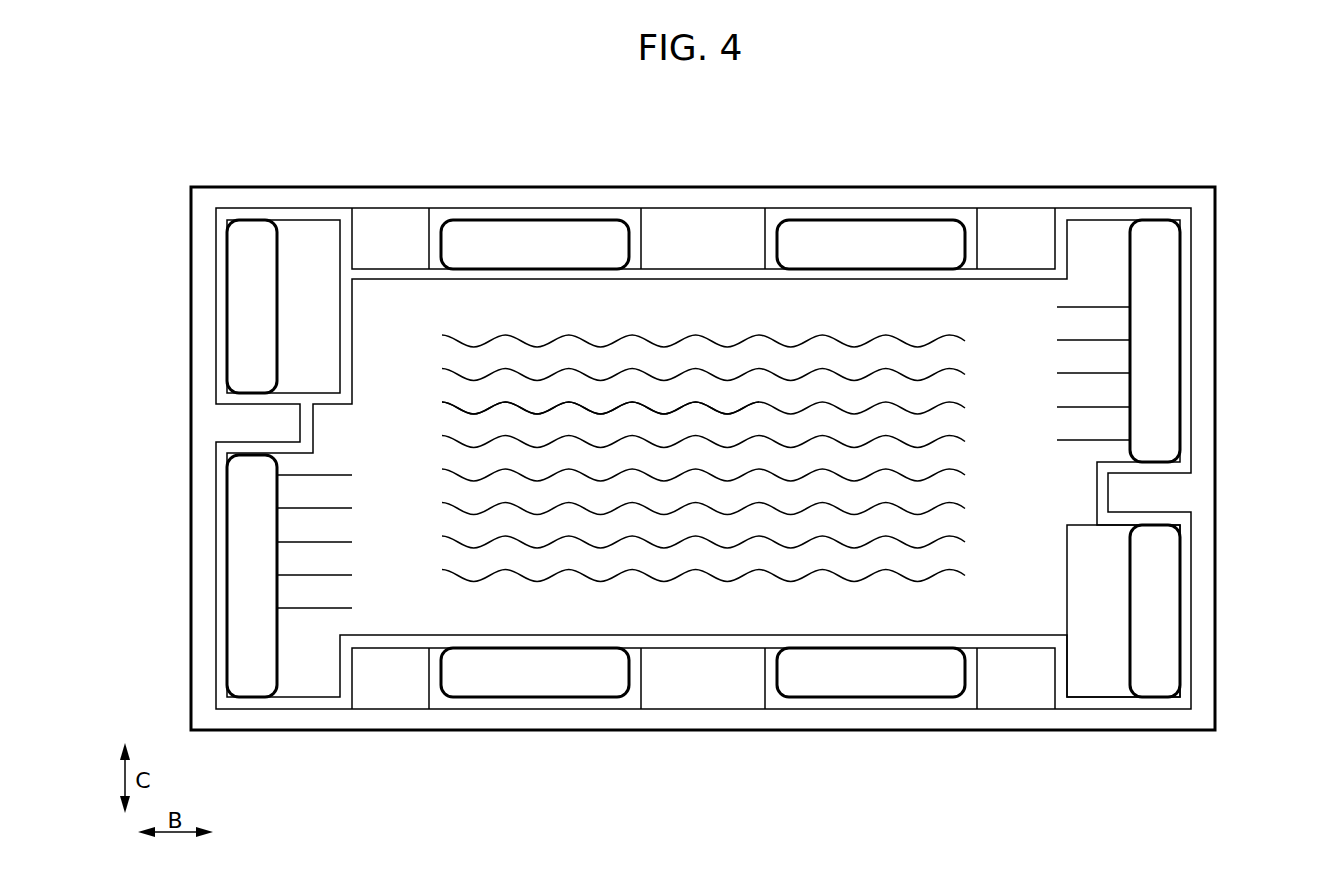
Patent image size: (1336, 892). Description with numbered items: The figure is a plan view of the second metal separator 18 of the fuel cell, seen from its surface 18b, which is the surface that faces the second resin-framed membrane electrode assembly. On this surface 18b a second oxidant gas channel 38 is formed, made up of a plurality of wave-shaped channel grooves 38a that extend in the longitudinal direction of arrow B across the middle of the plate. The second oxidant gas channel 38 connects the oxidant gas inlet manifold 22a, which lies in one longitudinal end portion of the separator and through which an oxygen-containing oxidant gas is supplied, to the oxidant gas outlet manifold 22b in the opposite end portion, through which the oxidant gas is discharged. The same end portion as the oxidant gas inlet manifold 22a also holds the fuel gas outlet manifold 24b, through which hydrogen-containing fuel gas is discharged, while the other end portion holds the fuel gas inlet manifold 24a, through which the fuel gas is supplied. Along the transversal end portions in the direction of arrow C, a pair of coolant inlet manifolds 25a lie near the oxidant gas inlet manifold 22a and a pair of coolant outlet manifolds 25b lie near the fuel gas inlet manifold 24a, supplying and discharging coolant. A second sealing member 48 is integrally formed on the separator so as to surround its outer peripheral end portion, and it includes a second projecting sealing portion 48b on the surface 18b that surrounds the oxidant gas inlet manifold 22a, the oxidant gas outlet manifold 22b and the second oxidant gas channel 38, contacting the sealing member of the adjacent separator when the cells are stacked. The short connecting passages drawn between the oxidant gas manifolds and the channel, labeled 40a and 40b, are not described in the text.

The second metal separator 18 is at (782, 92).
The surface of the second metal separator 18b is at (1022, 702).
The second sealing member 48 is at (406, 184).
The second projecting sealing portion 48b is at (710, 647).
The oxidant gas inlet manifold 22a is at (1148, 322).
The oxidant gas outlet manifold 22b is at (248, 545).
The fuel gas inlet manifold 24a is at (248, 308).
The fuel gas outlet manifold 24b is at (1165, 607).
The coolant inlet manifolds 25a is at (875, 240).
The coolant outlet manifolds 25b is at (531, 238).
The second oxidant gas channel 38 is at (665, 346).
The wave-shaped channel grooves 38a is at (750, 337).
The inlet connecting channels 40a is at (1092, 324).
The outlet connecting channels 40b is at (322, 598).